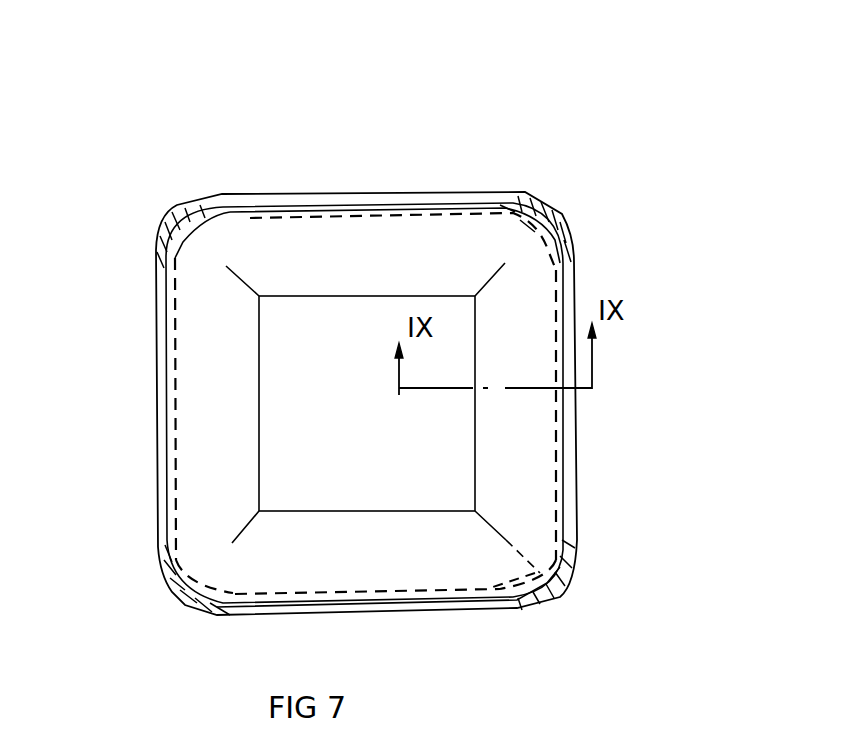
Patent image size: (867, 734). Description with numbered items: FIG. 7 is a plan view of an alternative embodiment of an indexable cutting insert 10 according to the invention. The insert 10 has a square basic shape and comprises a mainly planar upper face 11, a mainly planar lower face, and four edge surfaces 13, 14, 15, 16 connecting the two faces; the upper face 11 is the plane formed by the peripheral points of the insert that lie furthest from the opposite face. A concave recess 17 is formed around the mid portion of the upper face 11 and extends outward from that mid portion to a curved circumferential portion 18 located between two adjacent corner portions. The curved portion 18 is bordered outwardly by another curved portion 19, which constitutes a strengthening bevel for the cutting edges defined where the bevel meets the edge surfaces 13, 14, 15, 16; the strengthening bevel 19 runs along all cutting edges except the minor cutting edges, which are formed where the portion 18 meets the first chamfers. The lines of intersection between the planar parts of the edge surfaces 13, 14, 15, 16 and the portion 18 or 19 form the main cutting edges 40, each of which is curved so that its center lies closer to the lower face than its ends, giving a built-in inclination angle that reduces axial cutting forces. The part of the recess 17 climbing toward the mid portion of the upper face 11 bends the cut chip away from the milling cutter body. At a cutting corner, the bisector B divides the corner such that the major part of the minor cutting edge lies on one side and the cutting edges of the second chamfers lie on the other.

The indexable cutting insert 10 is at (502, 132).
The main cutting edge 40 is at (260, 197).
The edge surface 15 is at (428, 198).
The edge surface 16 is at (172, 360).
The edge surface 14 is at (563, 428).
The edge surface 13 is at (440, 597).
The curved circumferential portion 18 is at (557, 292).
The strengthening bevel 19 is at (570, 530).
The concave recess 17 is at (518, 484).
The upper face 11 is at (313, 350).
The bisector B is at (562, 600).